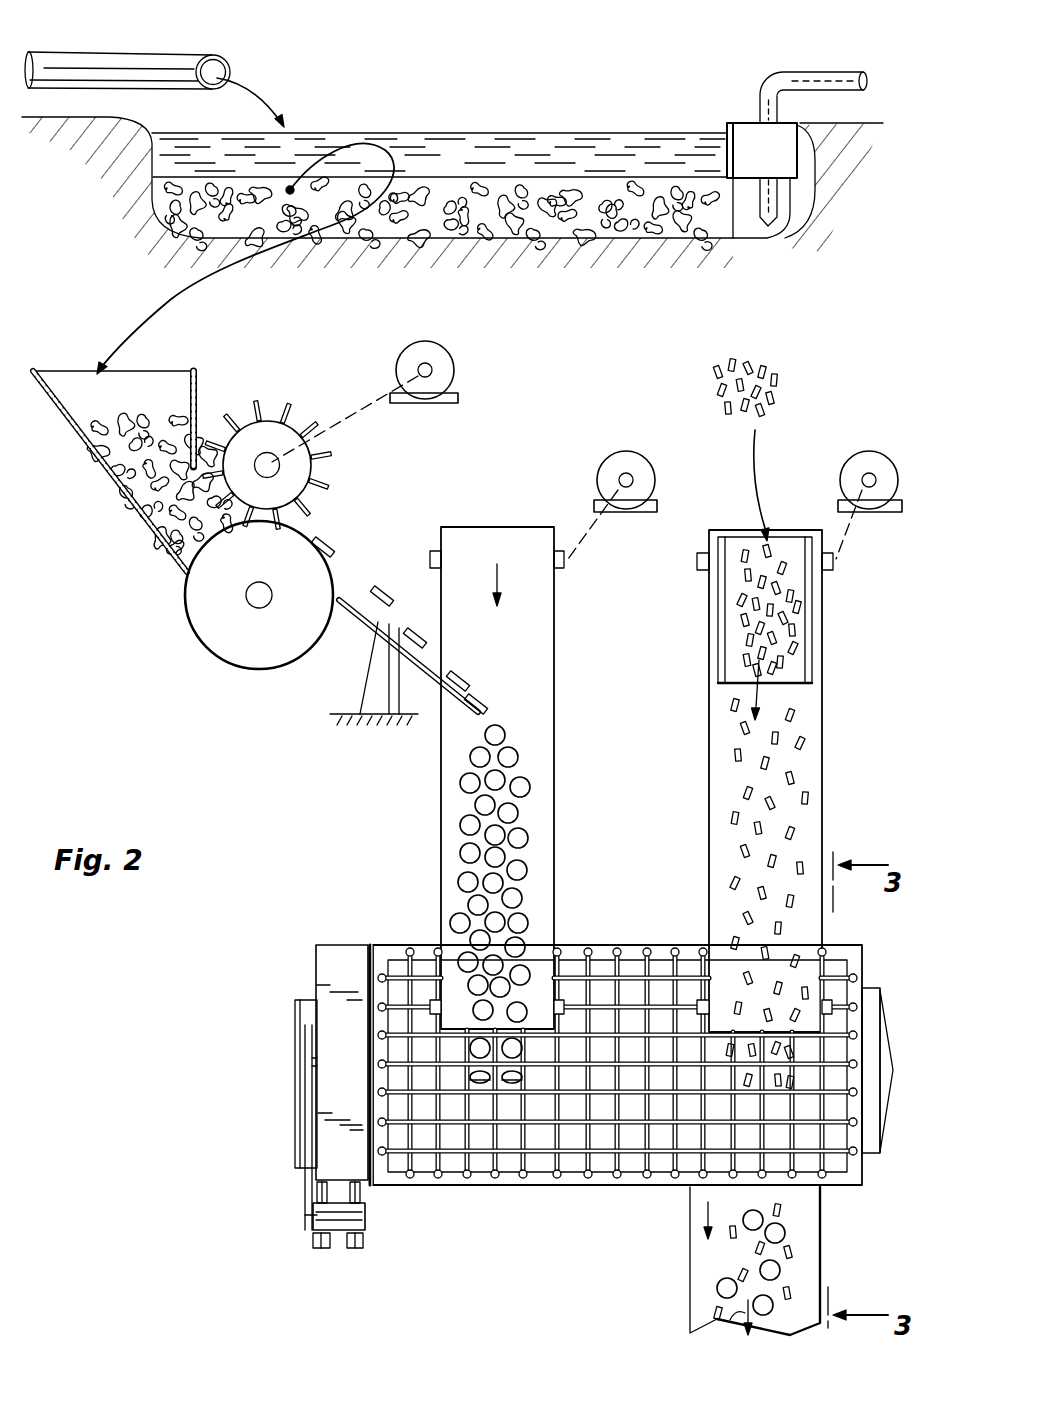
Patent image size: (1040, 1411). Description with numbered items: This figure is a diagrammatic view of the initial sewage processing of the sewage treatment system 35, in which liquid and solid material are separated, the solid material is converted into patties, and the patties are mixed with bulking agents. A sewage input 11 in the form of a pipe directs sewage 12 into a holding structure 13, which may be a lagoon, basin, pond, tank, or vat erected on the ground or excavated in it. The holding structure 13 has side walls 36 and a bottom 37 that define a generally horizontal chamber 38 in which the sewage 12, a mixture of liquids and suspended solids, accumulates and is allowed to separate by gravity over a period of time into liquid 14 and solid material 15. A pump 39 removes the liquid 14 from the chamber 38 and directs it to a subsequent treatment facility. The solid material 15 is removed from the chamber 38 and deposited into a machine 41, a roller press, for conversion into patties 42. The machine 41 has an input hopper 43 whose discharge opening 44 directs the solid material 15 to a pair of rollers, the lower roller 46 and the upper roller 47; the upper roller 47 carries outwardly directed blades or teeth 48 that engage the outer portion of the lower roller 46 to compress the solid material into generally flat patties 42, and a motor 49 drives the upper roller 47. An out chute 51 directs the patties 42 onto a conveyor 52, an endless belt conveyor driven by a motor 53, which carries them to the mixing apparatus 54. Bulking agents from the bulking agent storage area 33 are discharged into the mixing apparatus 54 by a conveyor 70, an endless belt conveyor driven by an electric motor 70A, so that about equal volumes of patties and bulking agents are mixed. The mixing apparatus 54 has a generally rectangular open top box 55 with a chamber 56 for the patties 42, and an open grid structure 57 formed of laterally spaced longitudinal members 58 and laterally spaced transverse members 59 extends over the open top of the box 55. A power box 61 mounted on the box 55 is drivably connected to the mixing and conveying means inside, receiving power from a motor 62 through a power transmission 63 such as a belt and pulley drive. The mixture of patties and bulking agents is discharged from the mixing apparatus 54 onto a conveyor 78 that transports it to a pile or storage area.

The sewage input 11 is at (146, 65).
The sewage 12 is at (273, 87).
The holding structure 13 is at (114, 211).
The liquid 14 is at (645, 143).
The solid material 15 is at (592, 218).
The bulking agent storage area 33 is at (767, 378).
The sewage treatment system 35 is at (600, 69).
The side walls 36 is at (152, 168).
The bottom 37 is at (484, 243).
The chamber 38 is at (466, 160).
The pump 39 is at (787, 167).
The machine 41 is at (220, 358).
The patties 42 is at (376, 578).
The input hopper 43 is at (105, 473).
The discharge opening 44 is at (180, 517).
The lower roller 46 is at (205, 627).
The upper roller 47 is at (265, 424).
The blades or teeth 48 is at (286, 410).
The motor 49 is at (453, 368).
The out chute 51 is at (365, 647).
The conveyor 52 is at (546, 640).
The motor 53 is at (610, 446).
The mixing apparatus 54 is at (349, 908).
The open top box 55 is at (842, 954).
The chamber 56 is at (629, 965).
The open grid structure 57 is at (542, 1168).
The longitudinal members 58 is at (608, 1127).
The transverse members 59 is at (584, 1133).
The power box 61 is at (328, 966).
The motor 62 is at (362, 1231).
The power transmission 63 is at (305, 1093).
The conveyor 70 is at (812, 811).
The motor 70A is at (869, 454).
The conveyor 78 is at (813, 1233).